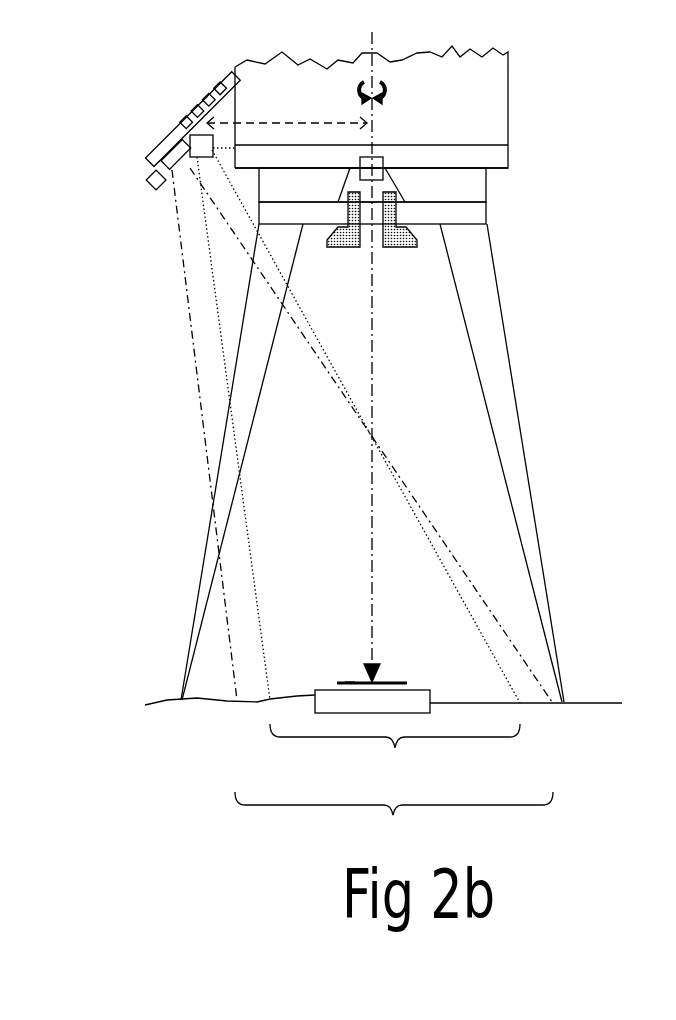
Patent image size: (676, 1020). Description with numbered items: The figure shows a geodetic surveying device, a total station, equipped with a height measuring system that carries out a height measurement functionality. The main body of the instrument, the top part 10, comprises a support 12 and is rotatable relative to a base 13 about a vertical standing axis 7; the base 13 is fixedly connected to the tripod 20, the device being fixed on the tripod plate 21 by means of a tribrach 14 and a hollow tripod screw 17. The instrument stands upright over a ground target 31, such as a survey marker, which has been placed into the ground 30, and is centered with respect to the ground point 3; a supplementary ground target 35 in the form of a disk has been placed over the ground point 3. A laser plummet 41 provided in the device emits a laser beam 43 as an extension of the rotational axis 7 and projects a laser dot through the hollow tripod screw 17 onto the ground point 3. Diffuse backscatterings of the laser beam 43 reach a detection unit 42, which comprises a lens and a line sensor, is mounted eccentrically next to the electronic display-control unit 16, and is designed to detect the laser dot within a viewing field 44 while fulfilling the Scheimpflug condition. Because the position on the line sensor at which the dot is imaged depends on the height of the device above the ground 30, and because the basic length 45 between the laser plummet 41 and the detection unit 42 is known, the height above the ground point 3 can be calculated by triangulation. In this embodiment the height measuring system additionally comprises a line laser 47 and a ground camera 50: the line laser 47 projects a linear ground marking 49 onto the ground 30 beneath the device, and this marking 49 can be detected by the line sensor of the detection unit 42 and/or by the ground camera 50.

The ground point 3 is at (372, 690).
The vertical standing axis 7 is at (403, 60).
The top part 10 is at (540, 94).
The support 12 is at (406, 134).
The base 13 is at (412, 154).
The tribrach 14 is at (418, 191).
The display-control unit 16 is at (166, 110).
The tripod screw 17 is at (452, 250).
The tripod 20 is at (541, 381).
The tripod plate 21 is at (418, 227).
The ground 30 is at (400, 682).
The ground target 31 is at (418, 698).
The supplementary ground target 35 is at (320, 652).
The laser plummet 41 is at (405, 157).
The detection unit 42 is at (200, 147).
The laser beam 43 is at (412, 357).
The viewing field 44 is at (395, 756).
The basic length 45 is at (287, 102).
The line laser 47 is at (172, 168).
The linear ground marking 49 is at (394, 822).
The ground camera 50 is at (157, 187).